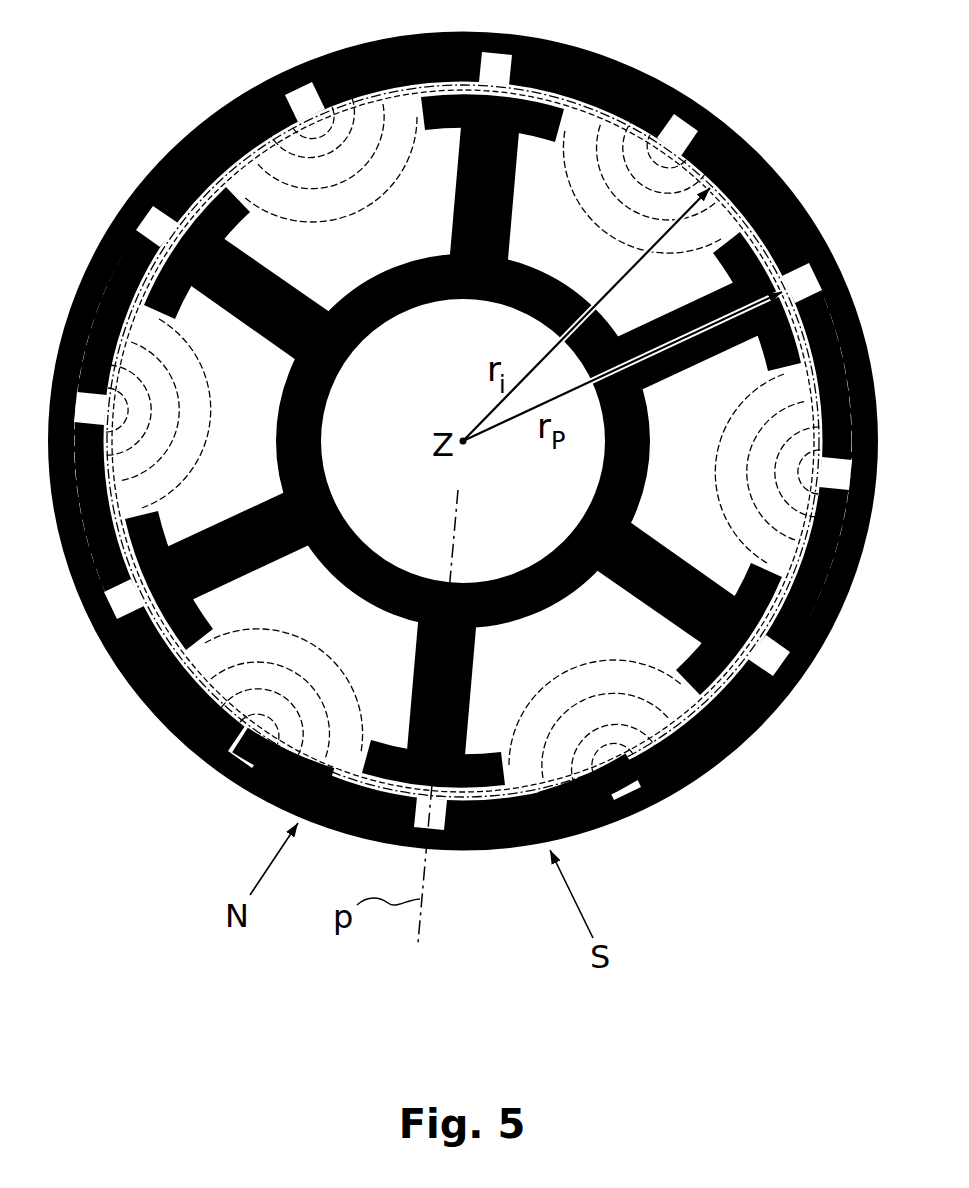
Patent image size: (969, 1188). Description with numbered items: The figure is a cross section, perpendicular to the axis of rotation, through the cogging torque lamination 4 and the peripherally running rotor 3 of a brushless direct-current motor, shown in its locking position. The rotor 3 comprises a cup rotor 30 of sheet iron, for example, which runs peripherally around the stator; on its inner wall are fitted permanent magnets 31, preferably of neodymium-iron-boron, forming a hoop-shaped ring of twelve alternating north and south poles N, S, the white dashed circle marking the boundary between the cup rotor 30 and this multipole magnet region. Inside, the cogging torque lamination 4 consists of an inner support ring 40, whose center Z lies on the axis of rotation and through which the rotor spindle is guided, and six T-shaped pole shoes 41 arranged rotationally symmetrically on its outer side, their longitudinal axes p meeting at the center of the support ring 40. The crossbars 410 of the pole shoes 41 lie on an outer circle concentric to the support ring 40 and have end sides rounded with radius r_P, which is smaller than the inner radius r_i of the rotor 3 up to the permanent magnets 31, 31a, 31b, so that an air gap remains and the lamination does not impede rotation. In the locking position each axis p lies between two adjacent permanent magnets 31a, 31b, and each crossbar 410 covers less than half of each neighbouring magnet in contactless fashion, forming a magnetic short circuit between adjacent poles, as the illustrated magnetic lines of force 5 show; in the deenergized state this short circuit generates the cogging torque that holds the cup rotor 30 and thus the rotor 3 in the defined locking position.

The rotor 3 is at (463, 455).
The cup rotor 30 is at (137, 693).
The permanent magnets 31 is at (108, 468).
The first adjacent permanent magnet 31a is at (305, 706).
The second adjacent permanent magnet 31b is at (555, 777).
The cogging torque lamination 4 is at (463, 440).
The support ring 40 is at (530, 565).
The pole shoes 41 is at (472, 685).
The crossbars 410 is at (388, 747).
The magnetic lines of force 5 is at (777, 550).